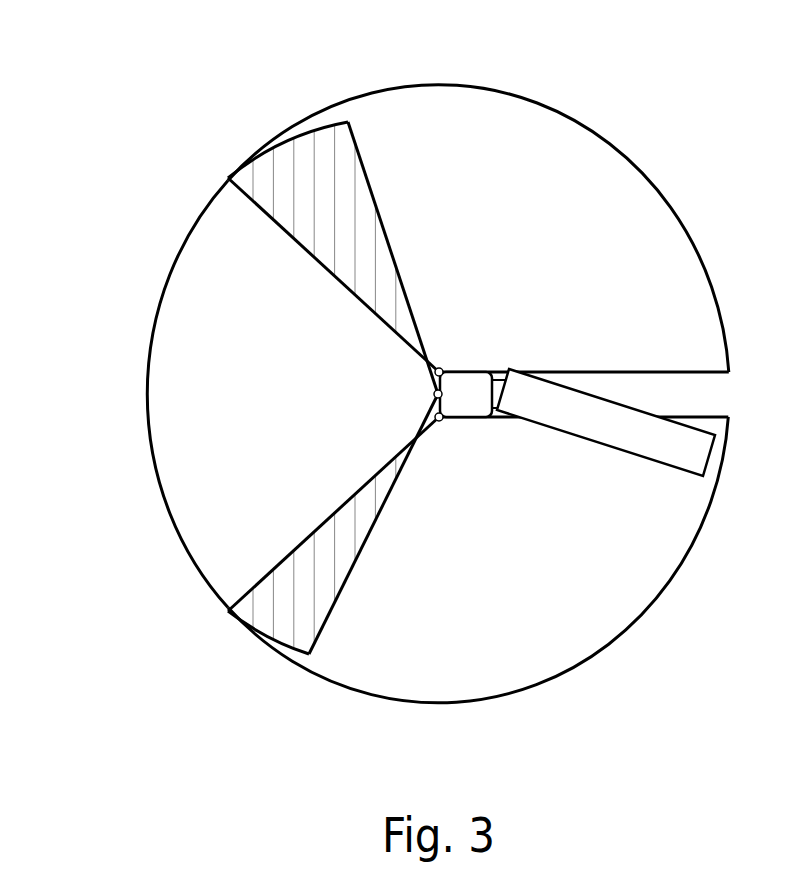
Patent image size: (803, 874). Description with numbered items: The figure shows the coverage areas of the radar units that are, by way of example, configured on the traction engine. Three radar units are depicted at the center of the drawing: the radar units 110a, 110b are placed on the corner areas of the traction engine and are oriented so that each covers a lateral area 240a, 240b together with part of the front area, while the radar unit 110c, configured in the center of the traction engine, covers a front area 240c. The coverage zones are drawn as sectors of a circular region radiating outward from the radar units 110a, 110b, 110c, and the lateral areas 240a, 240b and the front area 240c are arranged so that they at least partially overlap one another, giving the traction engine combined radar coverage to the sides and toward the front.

The radar unit 110a is at (440, 421).
The radar unit 110b is at (439, 368).
The radar unit 110c is at (434, 394).
The lateral area 240a is at (560, 678).
The lateral area 240b is at (623, 150).
The front area 240c is at (175, 525).